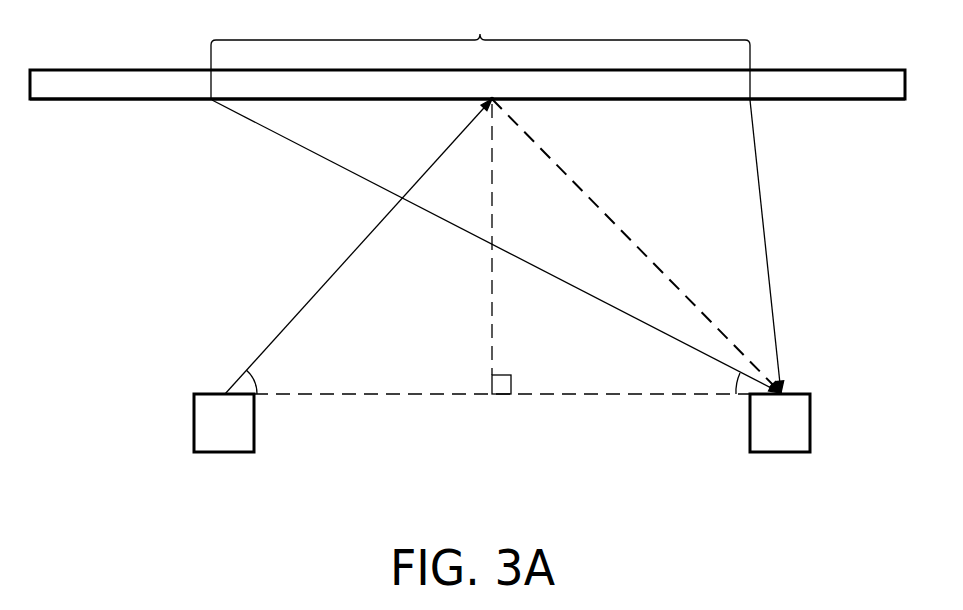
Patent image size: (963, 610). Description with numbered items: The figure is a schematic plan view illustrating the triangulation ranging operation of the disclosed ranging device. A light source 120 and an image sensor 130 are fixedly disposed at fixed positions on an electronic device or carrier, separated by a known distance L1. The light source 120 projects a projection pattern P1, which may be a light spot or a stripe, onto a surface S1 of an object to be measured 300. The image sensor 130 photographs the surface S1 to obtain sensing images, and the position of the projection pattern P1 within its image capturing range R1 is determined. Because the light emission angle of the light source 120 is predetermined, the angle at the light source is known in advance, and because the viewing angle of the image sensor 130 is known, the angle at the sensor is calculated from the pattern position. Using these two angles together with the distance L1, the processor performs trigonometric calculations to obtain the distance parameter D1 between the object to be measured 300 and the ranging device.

The object to be measured 300 is at (66, 77).
The surface S1 is at (107, 102).
The image capturing range R1 is at (480, 52).
The projection pattern P1 is at (512, 86).
The distance parameter D1 is at (484, 249).
The distance L1 is at (553, 395).
The light source 120 is at (222, 452).
The image sensor 130 is at (779, 452).